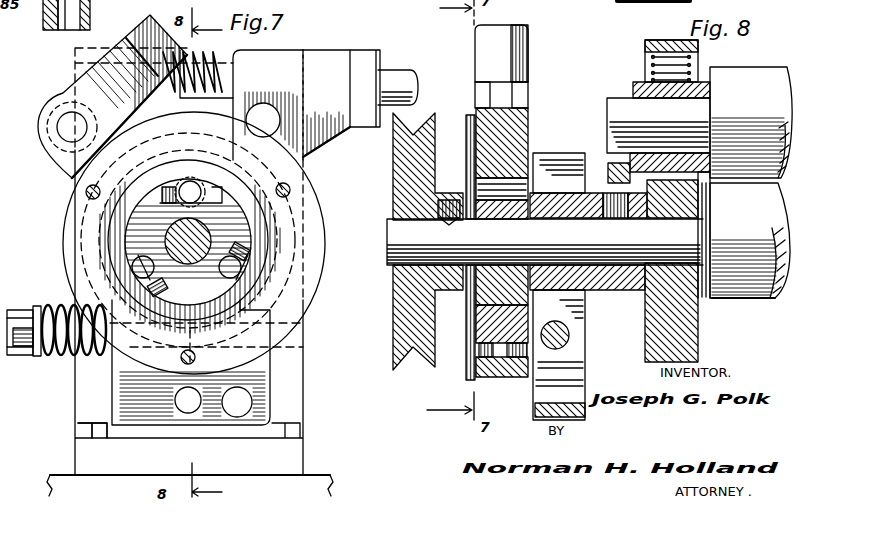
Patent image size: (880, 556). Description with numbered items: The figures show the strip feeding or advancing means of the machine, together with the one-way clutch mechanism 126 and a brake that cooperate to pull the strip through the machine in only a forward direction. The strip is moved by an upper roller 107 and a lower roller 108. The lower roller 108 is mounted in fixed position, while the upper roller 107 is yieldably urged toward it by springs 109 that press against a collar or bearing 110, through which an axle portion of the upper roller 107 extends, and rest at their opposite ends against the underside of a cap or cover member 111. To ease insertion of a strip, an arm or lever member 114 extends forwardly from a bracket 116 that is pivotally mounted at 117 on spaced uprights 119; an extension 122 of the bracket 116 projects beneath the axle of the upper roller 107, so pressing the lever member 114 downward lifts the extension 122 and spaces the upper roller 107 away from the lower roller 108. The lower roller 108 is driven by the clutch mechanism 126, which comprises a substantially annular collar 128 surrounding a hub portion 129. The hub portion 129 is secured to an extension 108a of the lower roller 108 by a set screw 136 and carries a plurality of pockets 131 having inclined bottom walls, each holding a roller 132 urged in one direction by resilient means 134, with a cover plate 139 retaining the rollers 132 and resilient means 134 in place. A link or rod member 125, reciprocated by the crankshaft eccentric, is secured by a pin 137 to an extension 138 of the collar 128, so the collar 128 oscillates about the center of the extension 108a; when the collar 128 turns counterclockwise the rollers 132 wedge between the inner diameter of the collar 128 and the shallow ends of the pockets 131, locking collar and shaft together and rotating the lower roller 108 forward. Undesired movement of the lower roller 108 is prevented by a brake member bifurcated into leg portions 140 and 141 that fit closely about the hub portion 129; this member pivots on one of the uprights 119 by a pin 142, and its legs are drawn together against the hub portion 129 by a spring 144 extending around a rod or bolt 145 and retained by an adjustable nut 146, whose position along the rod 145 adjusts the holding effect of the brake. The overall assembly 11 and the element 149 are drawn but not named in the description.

In FIG. 7, the clutch assembly 11 is at (49, 201).
In FIG. 7, the upper roller 107 is at (283, 94).
In FIG. 8, the upper roller 107 is at (778, 58).
In FIG. 8, the lower roller 108 is at (733, 298).
In FIG. 8, the extension of the roller 108a is at (388, 255).
In FIG. 7, the springs 109 is at (226, 90).
In FIG. 8, the springs 109 is at (650, 60).
In FIG. 8, the collar or bearing 110 is at (633, 88).
In FIG. 7, the cap or cover member 111 is at (283, 47).
In FIG. 8, the cap or cover member 111 is at (650, 53).
In FIG. 7, the arm or lever member 114 is at (402, 76).
In FIG. 7, the bracket 116 is at (320, 58).
In FIG. 7, the pivot 117 is at (279, 117).
In FIG. 7, the uprights 119 is at (78, 418).
In FIG. 8, the uprights 119 is at (690, 347).
In FIG. 8, the arm or extension of the bracket 122 is at (608, 165).
In FIG. 7, the link or rod member 125 is at (152, 23).
In FIG. 8, the link or rod member 125 is at (528, 36).
In FIG. 7, the clutch mechanism 126 is at (334, 247).
In FIG. 7, the annular collar 128 is at (306, 203).
In FIG. 8, the annular collar 128 is at (520, 137).
In FIG. 8, the hub portion 129 is at (598, 290).
In FIG. 7, the pockets or openings 131 is at (127, 250).
In FIG. 7, the roller 132 is at (318, 163).
In FIG. 7, the springs or resilient means 134 is at (157, 197).
In FIG. 8, the set screw 136 is at (606, 218).
In FIG. 7, the pin 137 is at (70, 127).
In FIG. 7, the extension of the collar 138 is at (45, 108).
In FIG. 8, the extension of the collar 138 is at (475, 97).
In FIG. 8, the cover plate 139 is at (466, 150).
In FIG. 7, the leg portion 140 is at (267, 372).
In FIG. 7, the leg portion 141 is at (115, 390).
In FIG. 8, the leg portion 141 is at (573, 354).
In FIG. 7, the pin 142 is at (252, 405).
In FIG. 7, the spring 144 is at (53, 363).
In FIG. 7, the rod or bolt 145 is at (42, 320).
In FIG. 7, the adjustable nut 146 is at (13, 358).
In FIG. 8, the pulley flange 149 is at (393, 140).